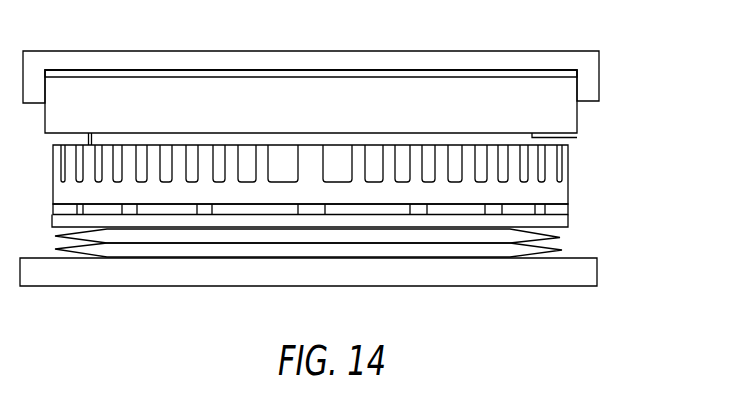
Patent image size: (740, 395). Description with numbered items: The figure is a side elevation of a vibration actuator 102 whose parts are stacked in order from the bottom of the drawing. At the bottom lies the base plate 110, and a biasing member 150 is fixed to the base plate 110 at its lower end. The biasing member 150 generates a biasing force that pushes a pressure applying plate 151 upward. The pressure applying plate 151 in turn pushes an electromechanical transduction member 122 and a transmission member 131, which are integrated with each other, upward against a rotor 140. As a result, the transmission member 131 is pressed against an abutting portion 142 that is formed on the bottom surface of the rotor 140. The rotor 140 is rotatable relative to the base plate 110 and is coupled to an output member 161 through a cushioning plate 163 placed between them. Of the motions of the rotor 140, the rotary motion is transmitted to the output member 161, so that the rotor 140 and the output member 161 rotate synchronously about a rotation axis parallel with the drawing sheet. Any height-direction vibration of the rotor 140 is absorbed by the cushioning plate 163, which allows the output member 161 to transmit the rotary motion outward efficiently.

The vibration actuator 102 is at (64, 40).
The output member 161 is at (599, 55).
The cushioning plate 163 is at (577, 73).
The rotor 140 is at (577, 117).
The abutting portion 142 is at (577, 138).
The transmission member 131 is at (568, 190).
The electromechanical transduction member 122 is at (568, 209).
The pressure applying plate 151 is at (568, 221).
The biasing member 150 is at (562, 239).
The base plate 110 is at (597, 271).